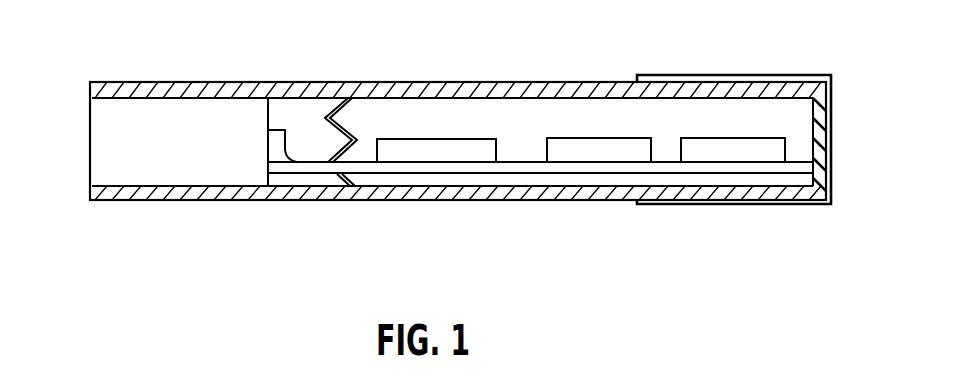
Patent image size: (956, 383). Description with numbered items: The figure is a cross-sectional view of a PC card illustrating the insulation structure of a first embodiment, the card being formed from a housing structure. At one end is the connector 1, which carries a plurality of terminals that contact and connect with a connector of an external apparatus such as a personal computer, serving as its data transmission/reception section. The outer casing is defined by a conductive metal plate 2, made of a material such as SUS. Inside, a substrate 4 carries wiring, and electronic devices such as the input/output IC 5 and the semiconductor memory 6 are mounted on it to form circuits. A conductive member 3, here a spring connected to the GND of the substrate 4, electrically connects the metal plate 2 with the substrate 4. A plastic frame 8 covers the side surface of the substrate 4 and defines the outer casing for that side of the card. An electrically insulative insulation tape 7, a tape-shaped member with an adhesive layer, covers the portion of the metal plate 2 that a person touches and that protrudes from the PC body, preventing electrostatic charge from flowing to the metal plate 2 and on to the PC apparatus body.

The connector 1 is at (113, 145).
The metal plate 2 is at (403, 90).
The conductive member 3 is at (336, 106).
The substrate 4 is at (521, 168).
The input/output IC 5 is at (440, 148).
The semiconductor memory 6 is at (583, 148).
The insulation tape 7 is at (722, 75).
The plastic frame 8 is at (820, 135).